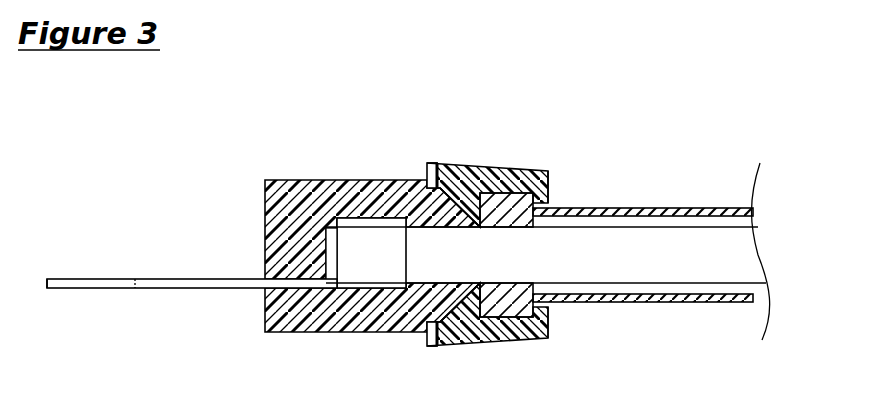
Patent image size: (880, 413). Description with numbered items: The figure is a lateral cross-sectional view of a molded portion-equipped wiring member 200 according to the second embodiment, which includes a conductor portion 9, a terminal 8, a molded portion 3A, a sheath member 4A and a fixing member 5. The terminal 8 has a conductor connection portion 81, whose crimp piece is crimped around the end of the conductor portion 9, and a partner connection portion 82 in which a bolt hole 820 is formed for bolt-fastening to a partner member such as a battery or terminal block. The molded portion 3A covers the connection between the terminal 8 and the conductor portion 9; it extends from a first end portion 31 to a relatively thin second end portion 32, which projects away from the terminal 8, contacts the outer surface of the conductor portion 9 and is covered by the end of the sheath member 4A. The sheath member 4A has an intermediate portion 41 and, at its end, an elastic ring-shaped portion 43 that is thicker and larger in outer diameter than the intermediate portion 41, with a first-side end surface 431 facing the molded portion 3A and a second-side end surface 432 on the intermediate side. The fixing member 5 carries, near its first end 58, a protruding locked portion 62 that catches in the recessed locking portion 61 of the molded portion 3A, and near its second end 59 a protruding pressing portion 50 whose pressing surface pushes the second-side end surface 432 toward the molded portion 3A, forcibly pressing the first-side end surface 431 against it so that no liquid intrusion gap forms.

The molded portion-equipped wiring member 200 is at (660, 112).
The molded portion 3A is at (261, 165).
The sheath member 4A is at (730, 192).
The first end portion 31 is at (265, 232).
The second end portion 32 is at (498, 300).
The conductor connection portion 81 is at (352, 236).
The partner connection portion 82 is at (177, 283).
The bolt hole 820 is at (82, 290).
The terminal 8 is at (175, 303).
The locking portion 61 is at (432, 193).
The first end 58 is at (428, 173).
The locked portion 62 is at (434, 172).
The fixing member 5 is at (552, 164).
The elastic ring-shaped portion 43 is at (503, 195).
The first-side end surface 431 is at (475, 312).
The second-side end surface 432 is at (543, 330).
The second end 59 is at (552, 177).
The pressing portion 50 is at (540, 208).
The intermediate portion 41 is at (675, 208).
The conductor portion 9 is at (755, 255).